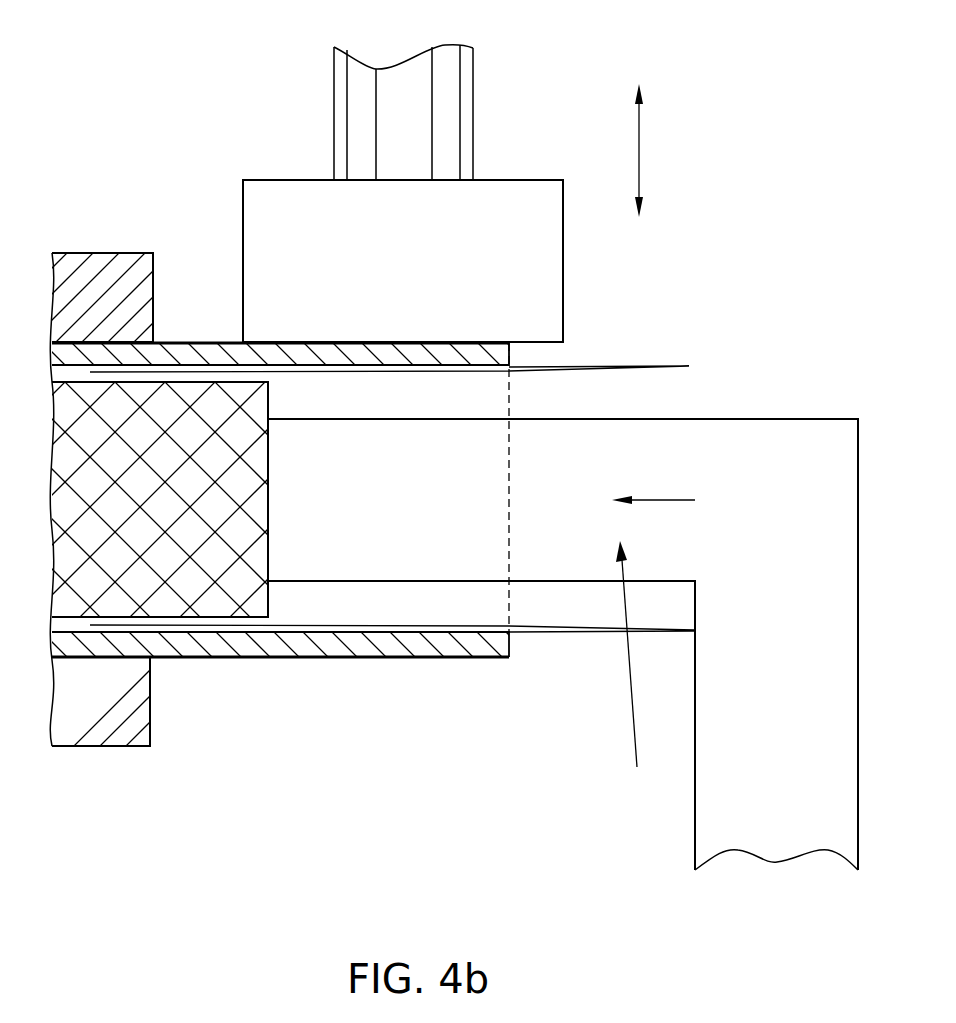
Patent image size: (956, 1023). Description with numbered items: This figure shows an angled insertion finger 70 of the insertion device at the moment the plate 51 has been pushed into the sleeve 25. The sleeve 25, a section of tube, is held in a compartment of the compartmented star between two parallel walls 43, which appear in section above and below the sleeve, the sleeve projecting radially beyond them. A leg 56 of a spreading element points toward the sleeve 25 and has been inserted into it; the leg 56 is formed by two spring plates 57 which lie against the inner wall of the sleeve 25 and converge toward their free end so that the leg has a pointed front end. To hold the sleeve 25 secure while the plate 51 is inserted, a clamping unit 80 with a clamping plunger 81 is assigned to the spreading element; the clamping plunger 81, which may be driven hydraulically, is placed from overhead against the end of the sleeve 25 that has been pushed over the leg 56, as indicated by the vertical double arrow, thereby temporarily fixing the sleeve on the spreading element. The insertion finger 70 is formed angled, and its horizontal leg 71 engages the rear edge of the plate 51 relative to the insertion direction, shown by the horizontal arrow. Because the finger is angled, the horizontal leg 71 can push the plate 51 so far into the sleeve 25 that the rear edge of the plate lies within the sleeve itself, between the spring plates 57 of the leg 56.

The clamping unit 80 is at (265, 150).
The clamping plunger 81 is at (279, 245).
The wall 43 is at (115, 277).
The spring plate 57 is at (545, 367).
The sleeve 25 is at (349, 362).
The leg 56 is at (612, 347).
The plate 51 is at (178, 546).
The horizontal leg 71 is at (768, 452).
The insertion finger 70 is at (633, 675).